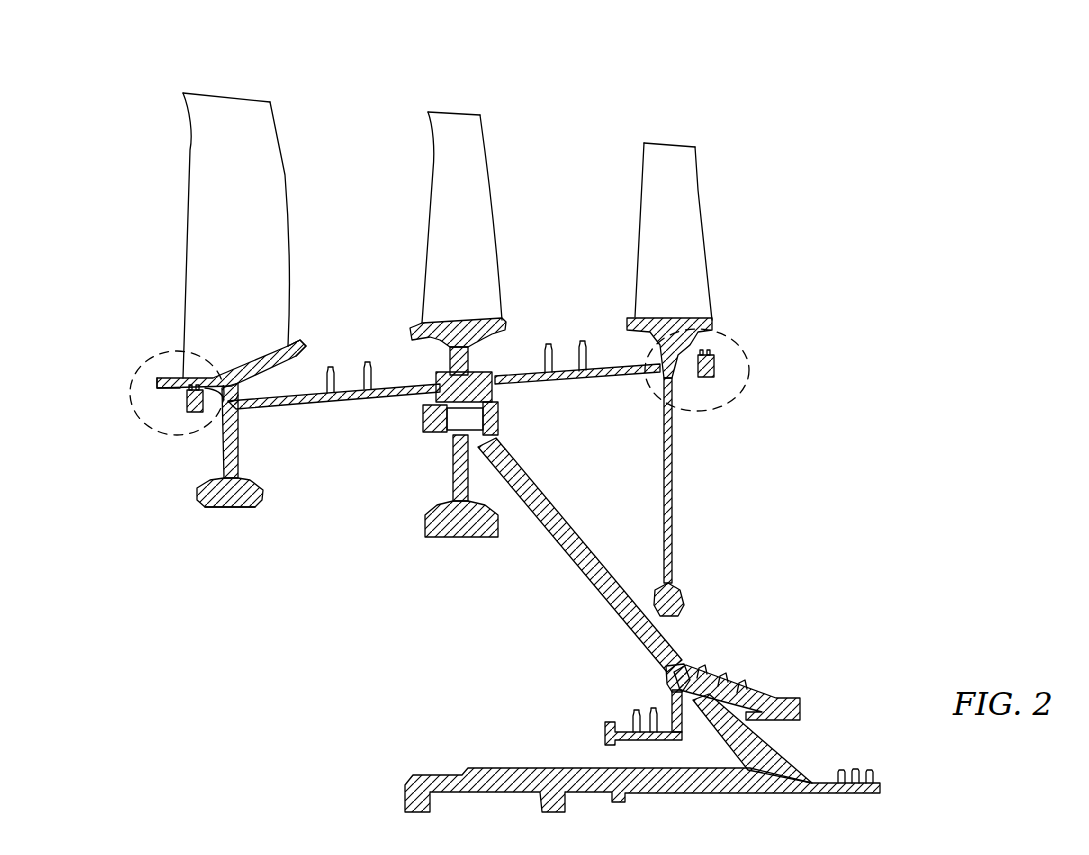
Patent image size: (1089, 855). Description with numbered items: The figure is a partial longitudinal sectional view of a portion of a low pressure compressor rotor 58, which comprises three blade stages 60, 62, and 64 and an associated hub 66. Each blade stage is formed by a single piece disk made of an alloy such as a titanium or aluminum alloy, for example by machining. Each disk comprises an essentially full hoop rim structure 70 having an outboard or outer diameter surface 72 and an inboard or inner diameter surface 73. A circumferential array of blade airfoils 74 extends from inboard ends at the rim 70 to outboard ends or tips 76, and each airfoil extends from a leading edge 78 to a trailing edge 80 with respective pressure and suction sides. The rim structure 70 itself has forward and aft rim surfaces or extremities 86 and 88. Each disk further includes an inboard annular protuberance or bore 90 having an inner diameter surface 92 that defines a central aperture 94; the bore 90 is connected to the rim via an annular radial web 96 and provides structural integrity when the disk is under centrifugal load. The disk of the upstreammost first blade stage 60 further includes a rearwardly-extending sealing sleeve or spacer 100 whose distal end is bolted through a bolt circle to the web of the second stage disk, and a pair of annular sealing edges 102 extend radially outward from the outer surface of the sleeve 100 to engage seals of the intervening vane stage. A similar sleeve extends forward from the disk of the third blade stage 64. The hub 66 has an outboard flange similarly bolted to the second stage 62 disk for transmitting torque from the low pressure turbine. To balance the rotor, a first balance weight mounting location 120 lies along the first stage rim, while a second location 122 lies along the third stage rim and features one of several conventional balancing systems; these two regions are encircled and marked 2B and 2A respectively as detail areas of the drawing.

The LPC rotor 58 is at (289, 733).
The first blade stage 60 is at (221, 305).
The second blade stage 62 is at (504, 109).
The third blade stage 64 is at (739, 347).
The hub 66 is at (698, 628).
The rim structure 70 is at (285, 346).
The outboard/outer diameter (OD) surface/face 72 is at (234, 331).
The inboard/inner diameter (ID) surface/face 73 is at (284, 398).
The blade airfoils 74 is at (233, 204).
The tips 76 is at (229, 94).
The leading edge 78 is at (188, 210).
The trailing edge 80 is at (284, 175).
The forward rim surface 86 is at (158, 381).
The aft rim surface 88 is at (359, 338).
The bore 90 is at (250, 472).
The inboard/inner diameter (ID) surface 92 is at (222, 512).
The central aperture 94 is at (268, 522).
The annular radial web 96 is at (264, 430).
The sealing sleeve/spacer 100 is at (334, 384).
The annular sealing edges 102 is at (381, 360).
The first location 120 is at (166, 402).
The second location 122 is at (720, 346).
The detail view 2A is at (750, 375).
The detail view 2B is at (158, 434).